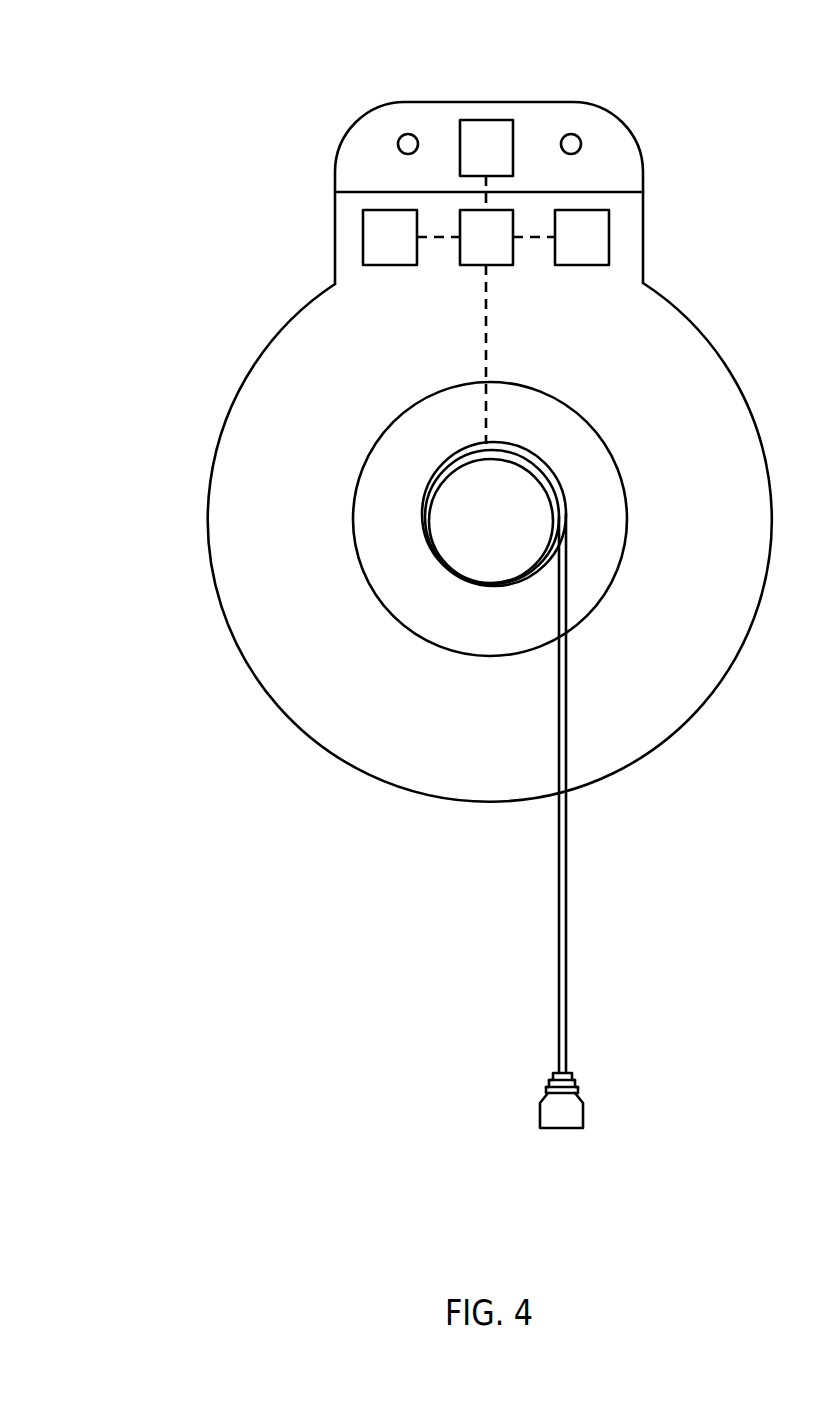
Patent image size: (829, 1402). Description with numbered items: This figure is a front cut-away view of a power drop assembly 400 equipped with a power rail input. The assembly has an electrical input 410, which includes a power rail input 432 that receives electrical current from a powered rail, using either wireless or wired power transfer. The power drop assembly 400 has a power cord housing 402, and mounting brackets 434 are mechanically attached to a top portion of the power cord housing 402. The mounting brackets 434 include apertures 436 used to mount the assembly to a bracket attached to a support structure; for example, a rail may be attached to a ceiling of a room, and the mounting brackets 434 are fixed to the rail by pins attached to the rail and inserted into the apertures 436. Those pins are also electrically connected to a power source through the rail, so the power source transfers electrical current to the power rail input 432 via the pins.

The power drop assembly 400 is at (170, 82).
The power cord housing 402 is at (490, 542).
The electrical input 410 is at (568, 266).
The power rail input 432 is at (488, 118).
The mounting brackets 434 is at (631, 130).
The apertures 436 is at (398, 148).